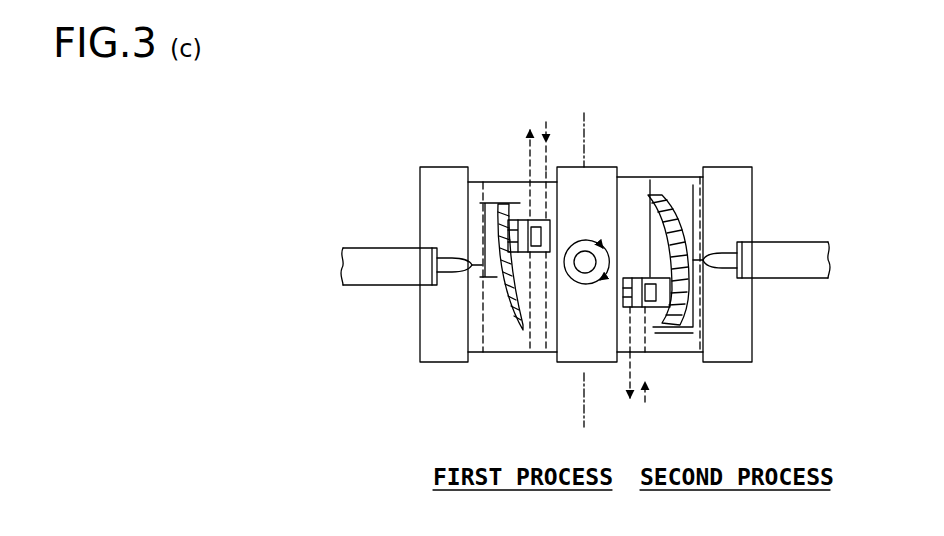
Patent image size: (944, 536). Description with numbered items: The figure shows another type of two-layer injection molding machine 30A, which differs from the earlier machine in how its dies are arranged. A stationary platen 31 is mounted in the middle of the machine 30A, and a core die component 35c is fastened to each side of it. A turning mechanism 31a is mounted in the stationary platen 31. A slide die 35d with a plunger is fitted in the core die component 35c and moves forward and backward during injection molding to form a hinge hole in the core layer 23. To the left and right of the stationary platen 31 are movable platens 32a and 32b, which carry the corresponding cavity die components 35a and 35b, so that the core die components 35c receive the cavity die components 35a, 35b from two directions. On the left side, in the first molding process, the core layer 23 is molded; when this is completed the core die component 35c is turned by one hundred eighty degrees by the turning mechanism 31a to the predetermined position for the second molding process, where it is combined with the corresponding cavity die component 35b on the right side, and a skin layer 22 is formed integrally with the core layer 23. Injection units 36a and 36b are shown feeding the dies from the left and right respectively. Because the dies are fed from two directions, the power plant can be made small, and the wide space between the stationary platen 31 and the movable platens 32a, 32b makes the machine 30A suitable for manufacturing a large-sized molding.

The two-layer injection molding machine 30A is at (723, 81).
The movable platen 32a is at (438, 200).
The movable platen 32b is at (737, 180).
The cavity die component 35a is at (505, 335).
The cavity die component 35b is at (660, 195).
The core die component 35c is at (623, 190).
The slide die 35d is at (550, 233).
The stationary platen 31 is at (597, 350).
The turning mechanism 31a is at (573, 287).
The core layer 23 is at (503, 292).
The skin layer 22 is at (683, 293).
The first welding tool 36a is at (378, 265).
The second welding tool 36b is at (797, 250).